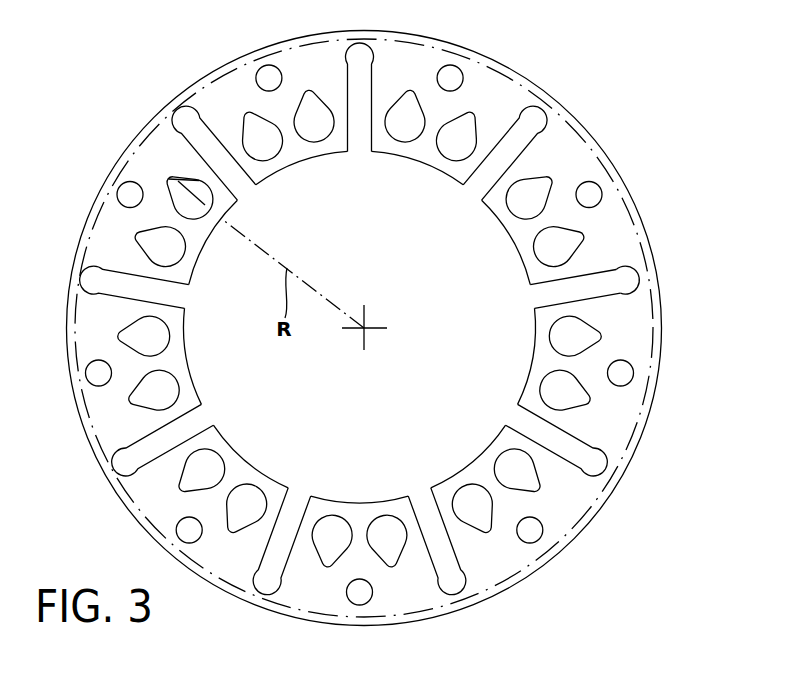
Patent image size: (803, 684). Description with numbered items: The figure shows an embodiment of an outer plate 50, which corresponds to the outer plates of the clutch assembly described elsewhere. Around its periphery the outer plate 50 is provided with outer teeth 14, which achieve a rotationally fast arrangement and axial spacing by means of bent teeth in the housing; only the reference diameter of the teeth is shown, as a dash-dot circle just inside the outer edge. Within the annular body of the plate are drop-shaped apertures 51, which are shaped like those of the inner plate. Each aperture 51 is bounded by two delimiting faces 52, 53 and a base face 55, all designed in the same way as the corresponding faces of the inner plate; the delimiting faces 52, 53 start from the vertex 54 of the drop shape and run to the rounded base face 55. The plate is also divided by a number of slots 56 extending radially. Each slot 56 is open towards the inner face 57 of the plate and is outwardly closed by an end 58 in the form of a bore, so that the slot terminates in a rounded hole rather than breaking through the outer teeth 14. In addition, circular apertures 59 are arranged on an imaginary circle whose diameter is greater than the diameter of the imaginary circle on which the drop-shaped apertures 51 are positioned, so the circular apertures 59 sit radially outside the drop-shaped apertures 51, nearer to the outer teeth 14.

The outer teeth 14 is at (415, 45).
The outer plate 50 is at (572, 77).
The apertures 51 is at (449, 146).
The delimiting face 52 is at (169, 178).
The delimiting face 53 is at (175, 195).
The vertex 54 is at (168, 179).
The base face 55 is at (193, 255).
The slots 56 is at (558, 295).
The inner face 57 is at (536, 346).
The end 58 is at (627, 281).
The circular apertures 59 is at (594, 192).